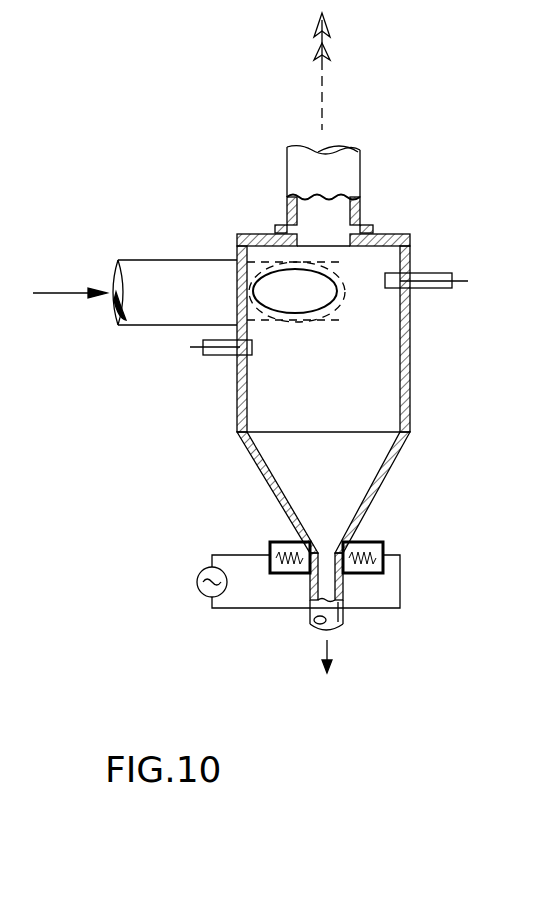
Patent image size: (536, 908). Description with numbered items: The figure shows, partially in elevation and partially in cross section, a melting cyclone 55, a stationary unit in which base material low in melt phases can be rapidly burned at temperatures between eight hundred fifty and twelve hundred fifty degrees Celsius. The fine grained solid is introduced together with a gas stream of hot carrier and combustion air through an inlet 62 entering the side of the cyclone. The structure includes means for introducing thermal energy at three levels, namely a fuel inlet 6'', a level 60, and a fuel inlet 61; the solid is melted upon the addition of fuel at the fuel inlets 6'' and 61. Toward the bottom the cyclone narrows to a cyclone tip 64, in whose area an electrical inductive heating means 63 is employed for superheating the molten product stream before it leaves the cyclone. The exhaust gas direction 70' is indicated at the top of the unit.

The exhaust direction 70' is at (353, 71).
The melting cyclone 55 is at (388, 211).
The inlet 62 is at (183, 280).
The fuel inlet 6'' is at (426, 263).
The fuel inlet 61 is at (214, 356).
The inductive heating means 63 is at (290, 544).
The cyclone tip 64 is at (325, 520).
The thermal energy introduction level 60 is at (370, 544).